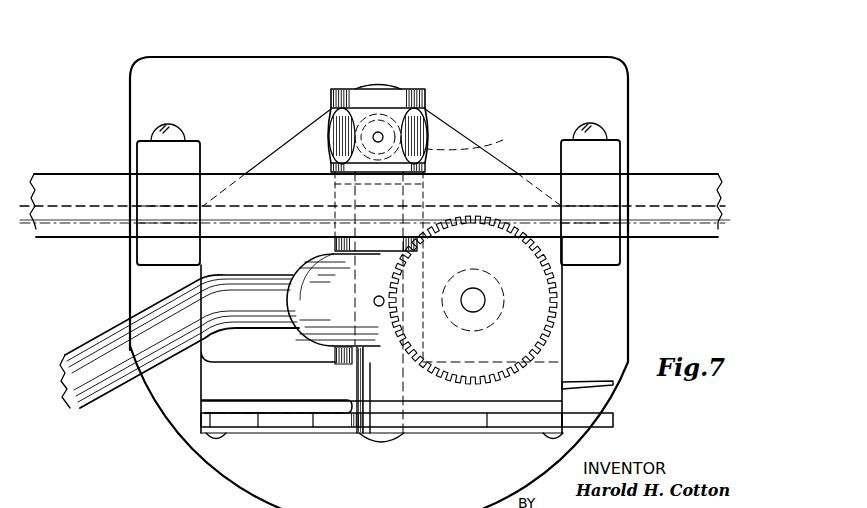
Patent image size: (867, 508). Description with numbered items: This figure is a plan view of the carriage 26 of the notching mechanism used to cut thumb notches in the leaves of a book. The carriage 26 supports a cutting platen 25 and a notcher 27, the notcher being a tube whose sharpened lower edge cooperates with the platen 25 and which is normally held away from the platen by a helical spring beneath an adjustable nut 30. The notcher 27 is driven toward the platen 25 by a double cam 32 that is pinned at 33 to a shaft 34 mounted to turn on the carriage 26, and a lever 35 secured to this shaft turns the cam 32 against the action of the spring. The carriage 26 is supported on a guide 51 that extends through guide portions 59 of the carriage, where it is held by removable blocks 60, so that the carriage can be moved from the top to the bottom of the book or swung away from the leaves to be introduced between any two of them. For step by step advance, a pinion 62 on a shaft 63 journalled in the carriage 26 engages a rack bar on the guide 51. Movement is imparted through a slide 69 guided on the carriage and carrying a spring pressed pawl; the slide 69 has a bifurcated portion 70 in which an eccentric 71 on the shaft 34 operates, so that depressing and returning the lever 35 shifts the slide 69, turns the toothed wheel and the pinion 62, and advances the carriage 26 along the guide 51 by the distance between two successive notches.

The cutting platen 25 is at (616, 94).
The carriage 26 is at (560, 372).
The notcher 27 is at (475, 140).
The adjustable nut 30 is at (427, 126).
The double cam 32 is at (396, 89).
The pin 33 is at (376, 136).
The shaft 34 is at (385, 442).
The lever 35 is at (100, 344).
The guide 51 is at (670, 174).
The guide portions 59 is at (152, 250).
The removable blocks 60 is at (193, 150).
The pinion 62 is at (558, 307).
The shaft 63 is at (476, 312).
The slide 69 is at (598, 430).
The bifurcated portion 70 is at (333, 422).
The eccentric 71 is at (439, 436).